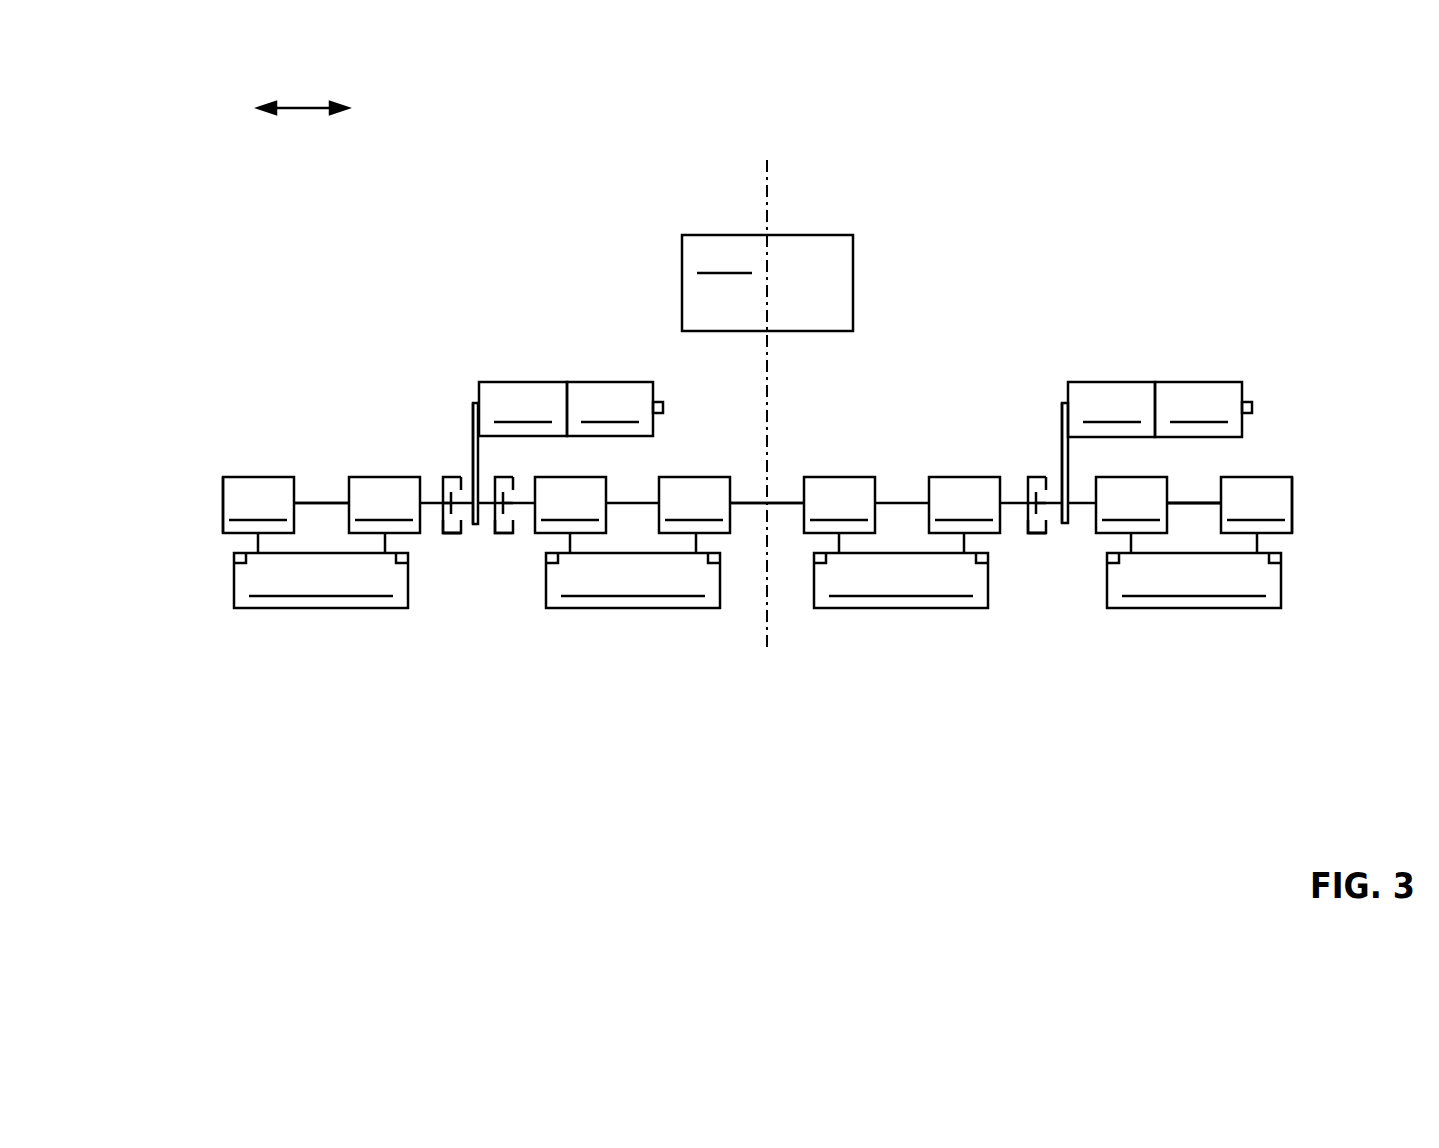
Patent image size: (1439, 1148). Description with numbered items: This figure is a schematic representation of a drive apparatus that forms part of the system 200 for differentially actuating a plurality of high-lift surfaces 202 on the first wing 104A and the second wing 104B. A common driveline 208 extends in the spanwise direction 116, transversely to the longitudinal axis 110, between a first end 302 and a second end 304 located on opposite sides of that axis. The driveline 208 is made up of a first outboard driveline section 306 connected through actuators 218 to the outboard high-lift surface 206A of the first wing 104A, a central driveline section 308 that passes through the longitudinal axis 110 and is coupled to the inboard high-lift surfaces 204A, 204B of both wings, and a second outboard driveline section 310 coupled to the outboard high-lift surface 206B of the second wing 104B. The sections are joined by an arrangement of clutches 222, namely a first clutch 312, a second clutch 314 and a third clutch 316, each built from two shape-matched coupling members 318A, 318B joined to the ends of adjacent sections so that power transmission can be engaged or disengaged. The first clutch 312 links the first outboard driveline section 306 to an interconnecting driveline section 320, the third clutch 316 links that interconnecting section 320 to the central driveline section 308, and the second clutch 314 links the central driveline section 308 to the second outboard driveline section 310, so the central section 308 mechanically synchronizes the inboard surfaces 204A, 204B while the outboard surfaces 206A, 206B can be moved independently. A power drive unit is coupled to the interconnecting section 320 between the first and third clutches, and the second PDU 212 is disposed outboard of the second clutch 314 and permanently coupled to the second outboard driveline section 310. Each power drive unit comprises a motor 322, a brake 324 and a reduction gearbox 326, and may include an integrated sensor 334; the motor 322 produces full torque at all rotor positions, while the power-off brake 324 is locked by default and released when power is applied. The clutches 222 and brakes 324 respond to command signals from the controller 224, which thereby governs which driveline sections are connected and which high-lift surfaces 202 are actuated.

The first wing 104A is at (462, 760).
The second wing 104B is at (1053, 745).
The longitudinal axis 110 is at (767, 163).
The spanwise direction 116 is at (302, 108).
The system 200 is at (1228, 255).
The high-lift surfaces 202 is at (757, 570).
The inboard high-lift surface 204A is at (633, 570).
The inboard high-lift surface 204B is at (901, 570).
The outboard high-lift surface 206A is at (321, 570).
The outboard high-lift surface 206B is at (1194, 570).
The common driveline 208 is at (788, 482).
The second PDU 212 is at (841, 399).
The actuator 218 is at (757, 505).
The clutches 222 is at (724, 573).
The controller 224 is at (767, 283).
The first end 302 is at (214, 504).
The second end 304 is at (1300, 505).
The first outboard driveline section 306 is at (316, 503).
The central driveline section 308 is at (753, 503).
The second outboard driveline section 310 is at (1193, 503).
The first clutch 312 is at (456, 533).
The second clutch 314 is at (1034, 477).
The third clutch 316 is at (500, 533).
The first coupling member 318A is at (447, 533).
The second coupling member 318B is at (444, 512).
The interconnecting driveline section 320 is at (467, 500).
The motor 322 is at (904, 409).
The brake 324 is at (817, 409).
The gearbox 326 is at (472, 408).
The integrated sensor 334 is at (663, 404).